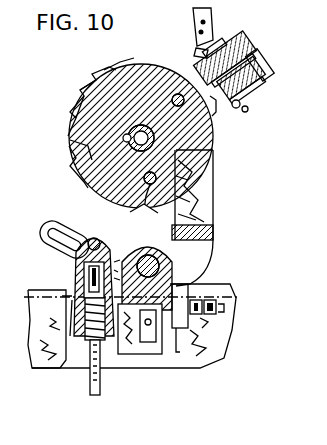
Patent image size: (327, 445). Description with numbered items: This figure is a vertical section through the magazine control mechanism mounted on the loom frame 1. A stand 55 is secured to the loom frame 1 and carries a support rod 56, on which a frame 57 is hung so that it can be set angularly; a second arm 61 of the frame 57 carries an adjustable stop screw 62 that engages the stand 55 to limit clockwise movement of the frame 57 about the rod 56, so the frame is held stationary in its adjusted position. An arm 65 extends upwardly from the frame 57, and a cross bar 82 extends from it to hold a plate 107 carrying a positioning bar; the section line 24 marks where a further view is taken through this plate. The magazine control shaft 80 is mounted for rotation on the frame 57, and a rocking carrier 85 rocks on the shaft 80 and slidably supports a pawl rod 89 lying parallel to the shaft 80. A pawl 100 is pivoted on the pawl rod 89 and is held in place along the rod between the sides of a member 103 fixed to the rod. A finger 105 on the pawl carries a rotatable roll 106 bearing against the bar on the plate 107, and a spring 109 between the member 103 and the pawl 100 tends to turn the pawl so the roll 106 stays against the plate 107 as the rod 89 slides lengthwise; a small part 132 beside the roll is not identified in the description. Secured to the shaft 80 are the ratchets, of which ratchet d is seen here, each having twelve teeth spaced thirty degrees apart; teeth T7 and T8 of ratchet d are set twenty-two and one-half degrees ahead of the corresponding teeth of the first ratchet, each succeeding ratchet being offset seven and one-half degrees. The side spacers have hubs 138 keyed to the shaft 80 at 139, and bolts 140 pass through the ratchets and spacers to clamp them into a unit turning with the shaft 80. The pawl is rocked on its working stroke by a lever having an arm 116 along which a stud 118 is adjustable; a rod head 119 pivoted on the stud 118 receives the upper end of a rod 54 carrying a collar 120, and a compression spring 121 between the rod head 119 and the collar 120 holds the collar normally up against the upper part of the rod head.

The loom frame 1 is at (212, 334).
The section line 24 is at (160, 58).
The rod 54 is at (100, 380).
The stand 55 is at (144, 356).
The support rod 56 is at (145, 278).
The frame 57 is at (214, 233).
The second arm 61 is at (190, 288).
The adjustable stop screw 62 is at (212, 306).
The arm 65 is at (206, 206).
The magazine control shaft 80 is at (214, 168).
The cross bar 82 is at (262, 72).
The rocking carrier 85 is at (232, 42).
The pawl rod 89 is at (233, 56).
The pawl 100 is at (205, 48).
The member 103 is at (196, 12).
The finger 105 is at (236, 70).
The roll 106 is at (214, 108).
The plate 107 is at (244, 88).
The spring 109 is at (196, 48).
The arm 116 is at (52, 226).
The stud 118 is at (92, 240).
The rod head 119 is at (80, 252).
The collar 120 is at (84, 296).
The compression spring 121 is at (70, 336).
The rollers 132 is at (246, 112).
The hubs 138 is at (88, 172).
The key 139 is at (136, 124).
The bolts 140 is at (144, 210).
The ratchet d is at (88, 145).
The tooth T7 is at (112, 66).
The tooth T8 is at (82, 95).